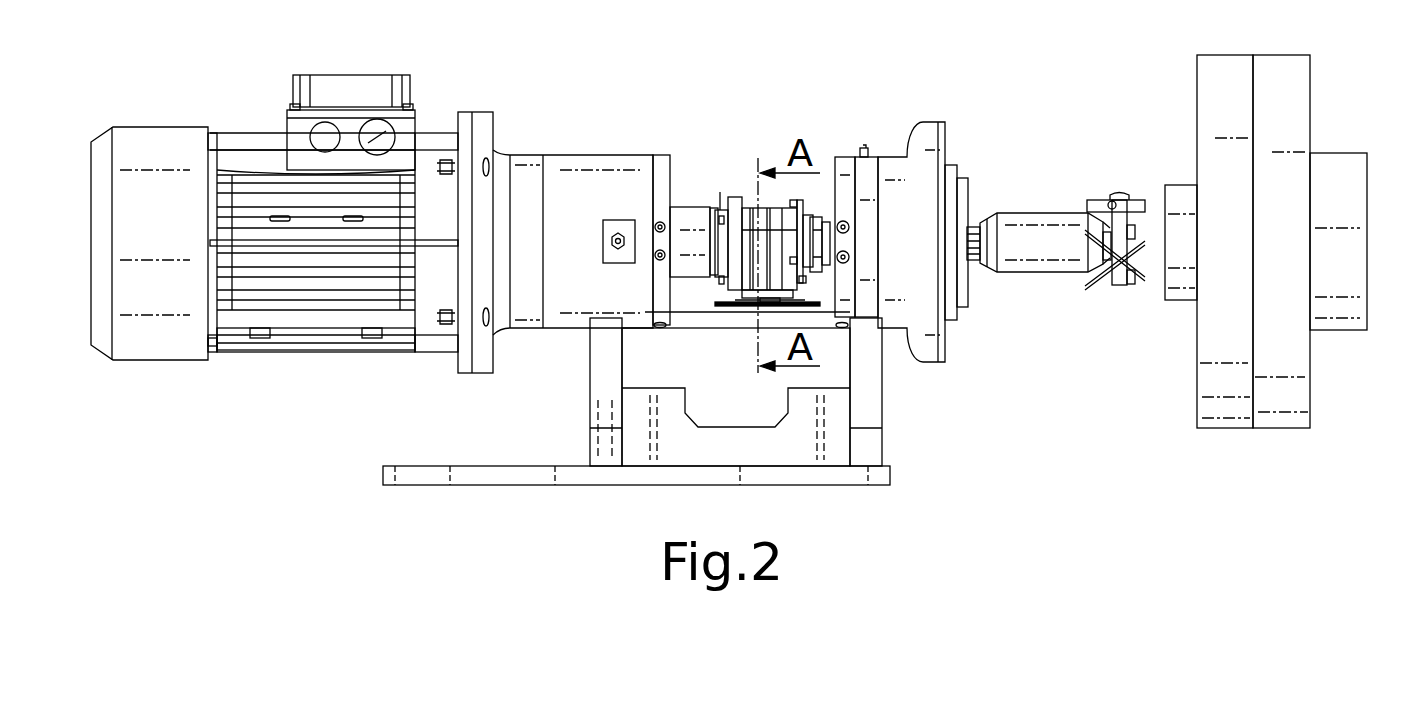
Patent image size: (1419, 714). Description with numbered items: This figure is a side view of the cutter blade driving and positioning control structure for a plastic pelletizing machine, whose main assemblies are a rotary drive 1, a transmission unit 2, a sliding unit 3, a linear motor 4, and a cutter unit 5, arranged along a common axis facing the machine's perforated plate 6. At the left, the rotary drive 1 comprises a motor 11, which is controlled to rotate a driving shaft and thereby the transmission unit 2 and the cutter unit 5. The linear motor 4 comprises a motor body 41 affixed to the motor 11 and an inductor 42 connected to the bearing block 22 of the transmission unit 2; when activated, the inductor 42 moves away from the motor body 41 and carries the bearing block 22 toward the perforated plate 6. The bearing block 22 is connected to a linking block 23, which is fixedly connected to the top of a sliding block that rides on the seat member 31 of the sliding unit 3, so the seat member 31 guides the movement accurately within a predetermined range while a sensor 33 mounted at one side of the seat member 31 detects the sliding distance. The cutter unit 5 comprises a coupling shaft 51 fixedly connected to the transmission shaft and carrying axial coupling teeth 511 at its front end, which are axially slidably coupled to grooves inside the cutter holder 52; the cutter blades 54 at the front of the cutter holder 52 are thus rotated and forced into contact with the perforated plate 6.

The rotary drive 1 is at (480, 93).
The motor 11 is at (325, 334).
The transmission unit 2 is at (826, 290).
The bearing block 22 is at (797, 205).
The linking block 23 is at (737, 203).
The sliding unit 3 is at (700, 297).
The seat member 31 is at (727, 303).
The sensor 33 is at (790, 312).
The linear motor 4 is at (698, 194).
The motor body 41 is at (723, 257).
The inductor 42 is at (683, 217).
The cutter unit 5 is at (1037, 200).
The coupling shaft 51 is at (830, 240).
The axial coupling teeth 511 is at (977, 225).
The cutter holder 52 is at (1058, 270).
The cutter blades 54 is at (1090, 283).
The perforated plate 6 is at (1224, 100).